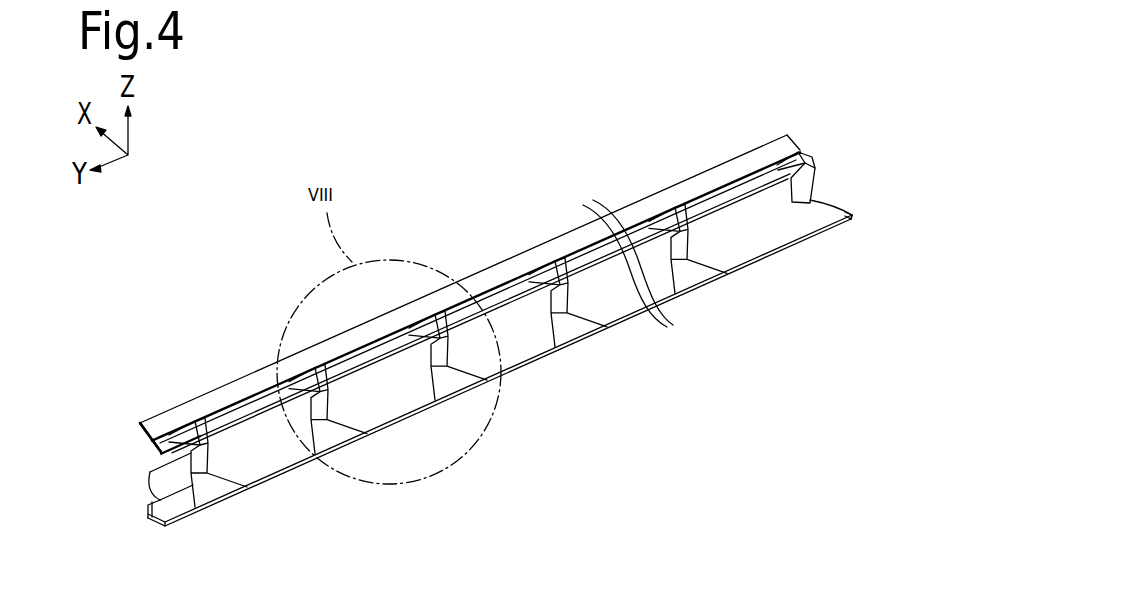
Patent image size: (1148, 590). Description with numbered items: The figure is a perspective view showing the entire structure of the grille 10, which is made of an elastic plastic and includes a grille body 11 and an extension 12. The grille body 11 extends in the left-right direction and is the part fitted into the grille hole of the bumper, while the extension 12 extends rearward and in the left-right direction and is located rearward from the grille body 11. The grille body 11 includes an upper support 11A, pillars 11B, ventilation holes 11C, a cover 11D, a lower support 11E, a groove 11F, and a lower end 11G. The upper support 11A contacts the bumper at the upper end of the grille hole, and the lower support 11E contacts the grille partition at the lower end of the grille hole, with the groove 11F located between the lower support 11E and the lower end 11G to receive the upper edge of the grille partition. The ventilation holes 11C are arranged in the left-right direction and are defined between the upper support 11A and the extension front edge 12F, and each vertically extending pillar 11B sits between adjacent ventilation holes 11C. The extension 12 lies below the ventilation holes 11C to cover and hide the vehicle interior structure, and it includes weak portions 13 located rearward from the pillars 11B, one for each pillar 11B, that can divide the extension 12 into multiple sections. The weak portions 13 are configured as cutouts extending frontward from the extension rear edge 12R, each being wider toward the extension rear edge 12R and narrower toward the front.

The grille 10 is at (502, 182).
The grille body 11 is at (800, 135).
The upper support 11A is at (143, 428).
The pillar 11B is at (255, 407).
The ventilation hole 11C is at (350, 372).
The cover 11D is at (163, 497).
The lower support 11E is at (151, 507).
The groove 11F is at (148, 513).
The lower end 11G is at (150, 521).
The extension 12 is at (762, 237).
The extension front edge 12F is at (824, 194).
The extension rear edge 12R is at (849, 203).
The weak portion 13 is at (466, 383).